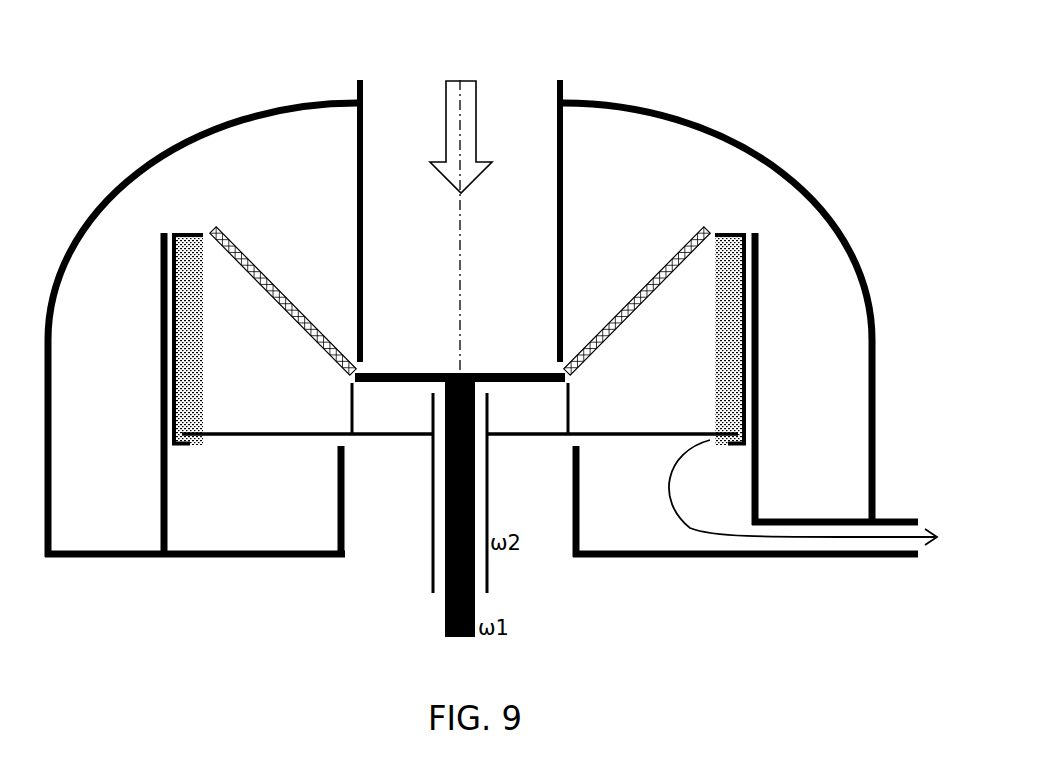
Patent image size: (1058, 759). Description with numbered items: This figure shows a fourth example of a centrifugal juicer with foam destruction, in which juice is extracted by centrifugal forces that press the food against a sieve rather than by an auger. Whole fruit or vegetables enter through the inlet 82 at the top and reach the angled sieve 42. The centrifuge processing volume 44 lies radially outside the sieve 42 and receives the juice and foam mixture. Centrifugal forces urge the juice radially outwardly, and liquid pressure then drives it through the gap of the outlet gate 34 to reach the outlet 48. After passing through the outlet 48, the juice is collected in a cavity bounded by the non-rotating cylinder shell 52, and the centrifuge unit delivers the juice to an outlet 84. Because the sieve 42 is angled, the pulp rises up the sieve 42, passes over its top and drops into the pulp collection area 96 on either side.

The inlet 82 is at (506, 228).
The sieve 42 is at (670, 262).
The centrifuge processing volume 44 is at (706, 367).
The outlet gate 34 is at (688, 430).
The outlet 48 is at (723, 442).
The non-rotating cylinder shell 52 is at (580, 468).
The pulp collection area 96 is at (128, 518).
The outlet 84 is at (903, 518).